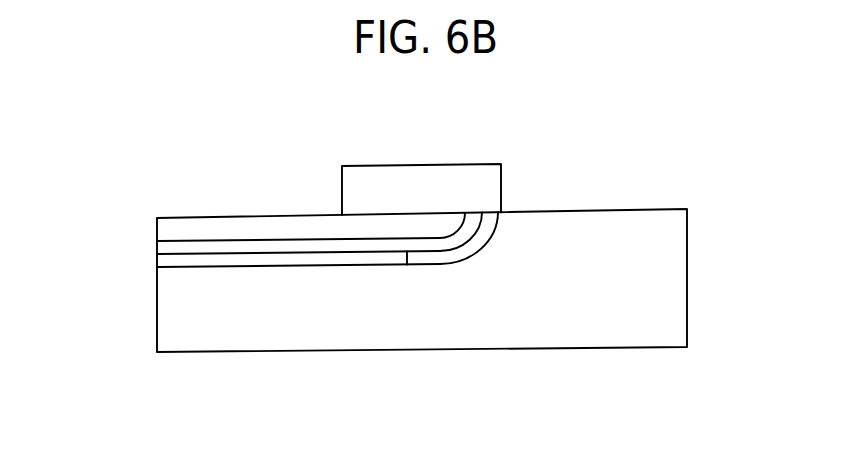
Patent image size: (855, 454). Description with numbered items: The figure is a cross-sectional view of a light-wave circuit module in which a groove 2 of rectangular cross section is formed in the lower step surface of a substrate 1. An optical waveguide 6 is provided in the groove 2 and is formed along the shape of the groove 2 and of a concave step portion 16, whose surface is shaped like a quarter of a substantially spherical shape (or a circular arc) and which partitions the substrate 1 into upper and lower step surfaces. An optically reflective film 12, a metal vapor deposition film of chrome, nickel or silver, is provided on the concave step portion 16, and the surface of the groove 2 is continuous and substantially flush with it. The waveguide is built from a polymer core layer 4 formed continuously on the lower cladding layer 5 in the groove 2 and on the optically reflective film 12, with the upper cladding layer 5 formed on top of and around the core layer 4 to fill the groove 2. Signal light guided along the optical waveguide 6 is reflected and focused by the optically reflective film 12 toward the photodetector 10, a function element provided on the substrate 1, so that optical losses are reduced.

The substrate 1 is at (670, 280).
The groove 2 is at (344, 273).
The core layer 4 is at (184, 248).
The cladding layer 5 is at (184, 228).
The optical waveguide 6 is at (344, 268).
The photodetector 10 is at (419, 167).
The optically reflective film 12 is at (425, 215).
The concave step portion 16 is at (481, 243).